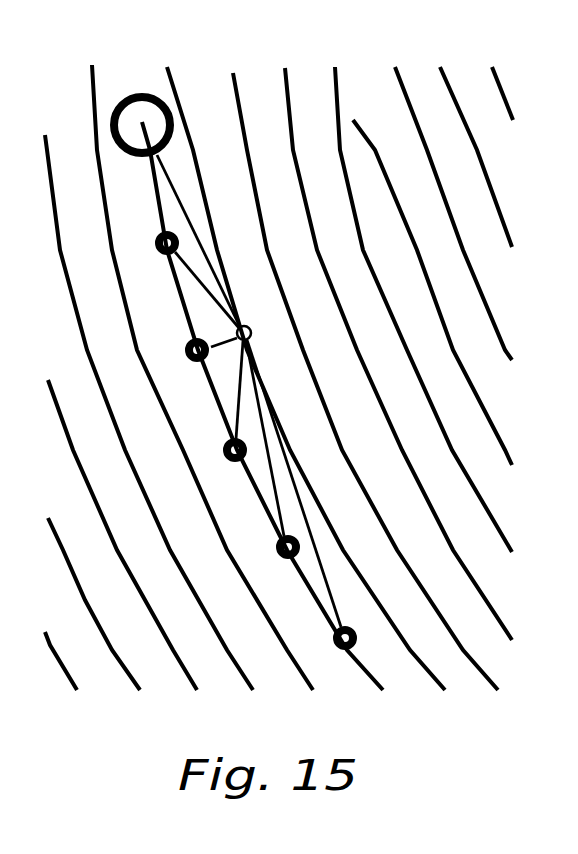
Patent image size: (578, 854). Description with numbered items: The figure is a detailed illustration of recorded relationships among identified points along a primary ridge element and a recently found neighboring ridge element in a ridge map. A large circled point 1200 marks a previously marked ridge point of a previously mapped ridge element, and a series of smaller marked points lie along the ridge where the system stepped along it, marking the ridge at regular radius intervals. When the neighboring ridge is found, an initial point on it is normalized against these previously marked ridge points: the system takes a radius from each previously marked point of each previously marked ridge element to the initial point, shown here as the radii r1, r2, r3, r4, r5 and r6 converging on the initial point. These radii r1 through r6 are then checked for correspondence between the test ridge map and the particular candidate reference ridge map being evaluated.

The selected position / center point 1200 is at (178, 93).
The radius to first neighboring point r1 is at (198, 241).
The radius to second neighboring point r2 is at (207, 290).
The radius to third neighboring point r3 is at (224, 353).
The radius to fourth neighboring point r4 is at (232, 390).
The radius to fifth neighboring point r5 is at (265, 438).
The radius to sixth neighboring point r6 is at (299, 483).